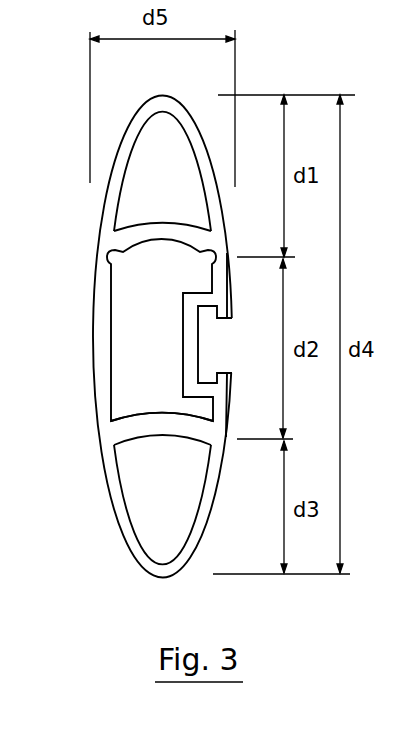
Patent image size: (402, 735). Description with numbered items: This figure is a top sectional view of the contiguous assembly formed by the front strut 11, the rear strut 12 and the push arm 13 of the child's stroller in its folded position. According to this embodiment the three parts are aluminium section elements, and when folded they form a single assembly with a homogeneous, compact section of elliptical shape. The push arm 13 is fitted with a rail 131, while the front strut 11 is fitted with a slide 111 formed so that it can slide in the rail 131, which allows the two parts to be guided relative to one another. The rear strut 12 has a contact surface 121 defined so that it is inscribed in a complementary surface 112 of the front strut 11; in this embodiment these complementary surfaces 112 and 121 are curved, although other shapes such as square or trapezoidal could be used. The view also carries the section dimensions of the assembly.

The tubular rail body 11 is at (100, 295).
The lower lobe cavity 12 is at (125, 521).
The upper lobe cavity 13 is at (120, 160).
The upper transverse web 111 is at (143, 249).
The lower transverse web 112 is at (149, 413).
The lower cavity upper wall 121 is at (152, 433).
The upper cavity lower wall 131 is at (118, 231).